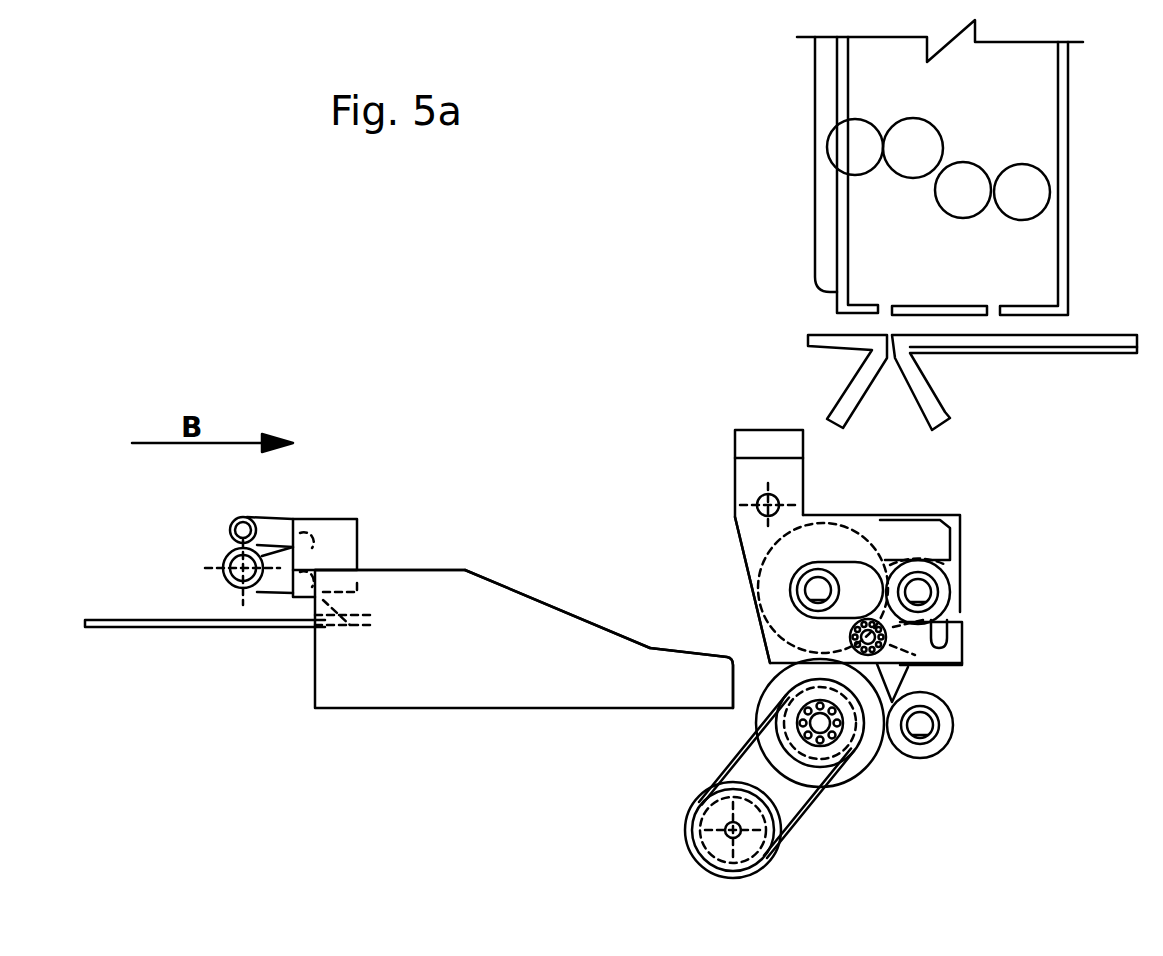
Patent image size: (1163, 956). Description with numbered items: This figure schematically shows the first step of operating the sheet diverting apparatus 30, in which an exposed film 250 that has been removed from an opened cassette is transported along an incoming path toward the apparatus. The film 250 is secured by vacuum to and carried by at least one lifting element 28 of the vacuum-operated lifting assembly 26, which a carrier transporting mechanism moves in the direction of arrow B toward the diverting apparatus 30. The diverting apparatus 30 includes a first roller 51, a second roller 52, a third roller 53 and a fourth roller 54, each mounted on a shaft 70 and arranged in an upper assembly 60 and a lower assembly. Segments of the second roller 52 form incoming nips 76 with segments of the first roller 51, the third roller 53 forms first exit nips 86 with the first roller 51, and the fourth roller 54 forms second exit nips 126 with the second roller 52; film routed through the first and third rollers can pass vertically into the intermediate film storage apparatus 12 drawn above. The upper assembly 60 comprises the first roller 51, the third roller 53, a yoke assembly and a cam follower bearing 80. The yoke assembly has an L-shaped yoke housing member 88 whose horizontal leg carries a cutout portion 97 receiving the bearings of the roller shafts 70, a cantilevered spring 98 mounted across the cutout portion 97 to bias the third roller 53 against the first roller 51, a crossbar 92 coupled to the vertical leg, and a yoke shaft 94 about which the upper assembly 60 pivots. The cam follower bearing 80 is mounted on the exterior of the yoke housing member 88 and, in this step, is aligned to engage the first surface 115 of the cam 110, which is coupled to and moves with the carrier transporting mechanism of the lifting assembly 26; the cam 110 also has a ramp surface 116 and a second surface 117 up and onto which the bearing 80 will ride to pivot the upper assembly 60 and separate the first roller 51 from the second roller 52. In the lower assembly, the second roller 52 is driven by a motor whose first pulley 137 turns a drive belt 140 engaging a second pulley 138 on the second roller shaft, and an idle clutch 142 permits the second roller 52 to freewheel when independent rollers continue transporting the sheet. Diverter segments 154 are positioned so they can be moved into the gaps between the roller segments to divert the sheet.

The intermediate film storage apparatus 12 is at (805, 175).
The vacuum-operated lifting assembly 26 is at (318, 519).
The lifting element 28 is at (355, 612).
The sheet diverting apparatus 30 is at (982, 748).
The first roller 51 is at (822, 527).
The second roller 52 is at (867, 772).
The third roller 53 is at (952, 572).
The fourth roller 54 is at (955, 722).
The upper assembly 60 is at (703, 398).
The shaft 70 is at (868, 656).
The incoming nip 76 is at (768, 670).
The cam follower bearing 80 is at (964, 643).
The first exit nip 86 is at (888, 560).
The yoke housing member 88 is at (766, 492).
The crossbar 92 is at (735, 446).
The yoke shaft 94 is at (758, 512).
The cutout portion 97 is at (855, 562).
The cantilevered spring 98 is at (962, 547).
The cam 110 is at (480, 697).
The first surface 115 is at (700, 656).
The ramp surface 116 is at (568, 612).
The second surface 117 is at (438, 570).
The second exit nip 126 is at (886, 757).
The first pulley 137 is at (690, 833).
The second pulley 138 is at (790, 733).
The drive belt 140 is at (802, 832).
The idle clutch 142 is at (822, 746).
The diverter segment 154 is at (905, 662).
The exposed film 250 is at (233, 630).